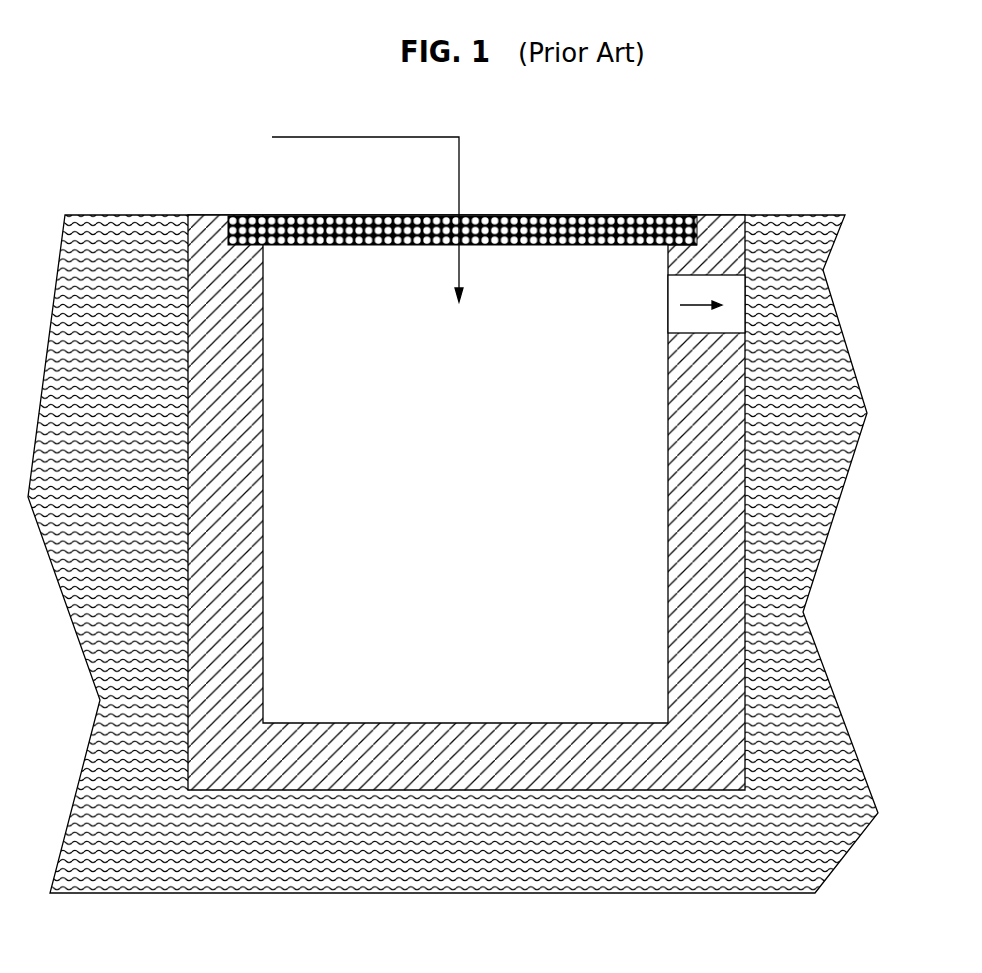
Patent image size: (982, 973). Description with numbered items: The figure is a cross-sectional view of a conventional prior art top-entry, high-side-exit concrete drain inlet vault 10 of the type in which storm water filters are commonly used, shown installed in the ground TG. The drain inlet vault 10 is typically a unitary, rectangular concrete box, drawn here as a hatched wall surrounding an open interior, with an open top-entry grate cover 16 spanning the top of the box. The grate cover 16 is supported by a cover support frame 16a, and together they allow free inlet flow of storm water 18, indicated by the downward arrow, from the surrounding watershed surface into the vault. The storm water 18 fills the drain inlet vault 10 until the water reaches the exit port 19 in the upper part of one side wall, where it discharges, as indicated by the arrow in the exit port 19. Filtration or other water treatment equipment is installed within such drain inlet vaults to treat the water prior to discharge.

The drain inlet vault 10 is at (497, 797).
The grate cover 16 is at (277, 213).
The cover support frame 16a is at (658, 247).
The storm water 18 is at (355, 213).
The exit port 19 is at (730, 325).
The surrounding medium region TG is at (83, 215).